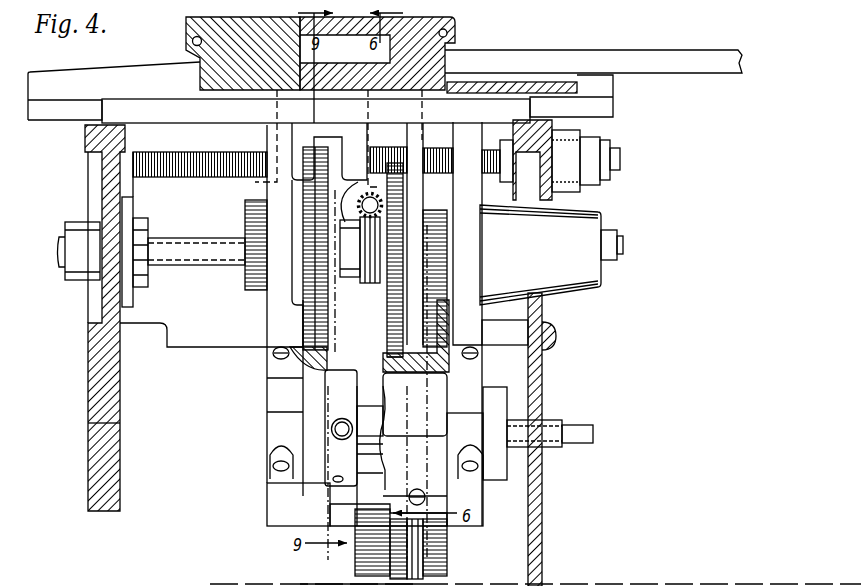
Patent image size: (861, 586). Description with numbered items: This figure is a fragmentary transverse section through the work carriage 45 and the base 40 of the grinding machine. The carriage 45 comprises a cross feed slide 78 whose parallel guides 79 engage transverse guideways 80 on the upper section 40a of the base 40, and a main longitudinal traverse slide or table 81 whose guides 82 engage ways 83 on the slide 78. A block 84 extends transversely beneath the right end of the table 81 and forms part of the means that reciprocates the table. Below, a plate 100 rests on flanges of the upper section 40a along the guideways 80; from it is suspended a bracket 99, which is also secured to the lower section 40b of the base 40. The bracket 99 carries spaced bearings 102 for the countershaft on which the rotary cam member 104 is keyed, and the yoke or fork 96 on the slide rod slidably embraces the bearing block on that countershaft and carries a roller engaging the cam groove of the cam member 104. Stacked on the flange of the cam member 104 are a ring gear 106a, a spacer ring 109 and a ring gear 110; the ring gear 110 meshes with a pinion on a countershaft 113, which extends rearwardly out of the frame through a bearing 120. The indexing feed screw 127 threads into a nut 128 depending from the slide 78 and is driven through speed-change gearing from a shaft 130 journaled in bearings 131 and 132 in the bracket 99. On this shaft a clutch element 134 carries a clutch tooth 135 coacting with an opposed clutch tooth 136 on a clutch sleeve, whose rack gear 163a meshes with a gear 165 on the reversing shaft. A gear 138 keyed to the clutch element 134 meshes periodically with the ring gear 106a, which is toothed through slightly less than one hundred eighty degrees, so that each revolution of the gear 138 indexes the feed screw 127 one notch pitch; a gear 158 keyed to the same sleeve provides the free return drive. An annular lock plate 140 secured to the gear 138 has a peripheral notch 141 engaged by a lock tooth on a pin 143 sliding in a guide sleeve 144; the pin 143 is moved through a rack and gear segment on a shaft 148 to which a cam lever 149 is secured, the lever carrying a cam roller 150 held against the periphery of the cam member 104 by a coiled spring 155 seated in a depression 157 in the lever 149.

The main longitudinal traverse slide or table 81 is at (186, 20).
The guides 82 is at (192, 46).
The ways 83 is at (200, 78).
The cross feed slide 78 is at (563, 50).
The parallel guides 79 is at (607, 105).
The transverse guideways 80 is at (138, 115).
The plate 100 is at (230, 113).
The feed screw 127 is at (247, 151).
The bearing 132 is at (253, 199).
The nut 128 is at (357, 133).
The gear 165 is at (388, 147).
The clutch element 134 is at (403, 217).
The countershaft 113 is at (197, 210).
The clutch tooth 135 is at (397, 237).
The clutch tooth 136 is at (397, 248).
The annular lock plate 140 is at (415, 287).
The ring gear 110 is at (453, 290).
The shaft 130 is at (617, 240).
The bearing 120 is at (82, 263).
The gear 158 is at (285, 305).
The longitudinal rack gear 163a is at (360, 279).
The notch 141 is at (417, 330).
The bearing 131 is at (577, 287).
The bracket 99 is at (277, 315).
The gear 138 is at (393, 312).
The upper section of the base 40a is at (100, 333).
The base 40 is at (552, 356).
The lower section of the base 40b is at (100, 424).
The yoke or fork 96 is at (300, 378).
The guide sleeve 144 is at (433, 383).
The coiled spring 155 is at (343, 419).
The cam roller 150 is at (367, 418).
The depression 157 is at (330, 439).
The shaft 148 is at (365, 486).
The pin 143 is at (417, 489).
The cam lever 149 is at (340, 451).
The ring gear 106a is at (328, 521).
The bearings 102 is at (498, 474).
The spacer ring 109 is at (447, 549).
The rotary cam member 104 is at (368, 554).
The work carriage 45 is at (50, 585).
The block 84 is at (398, 581).